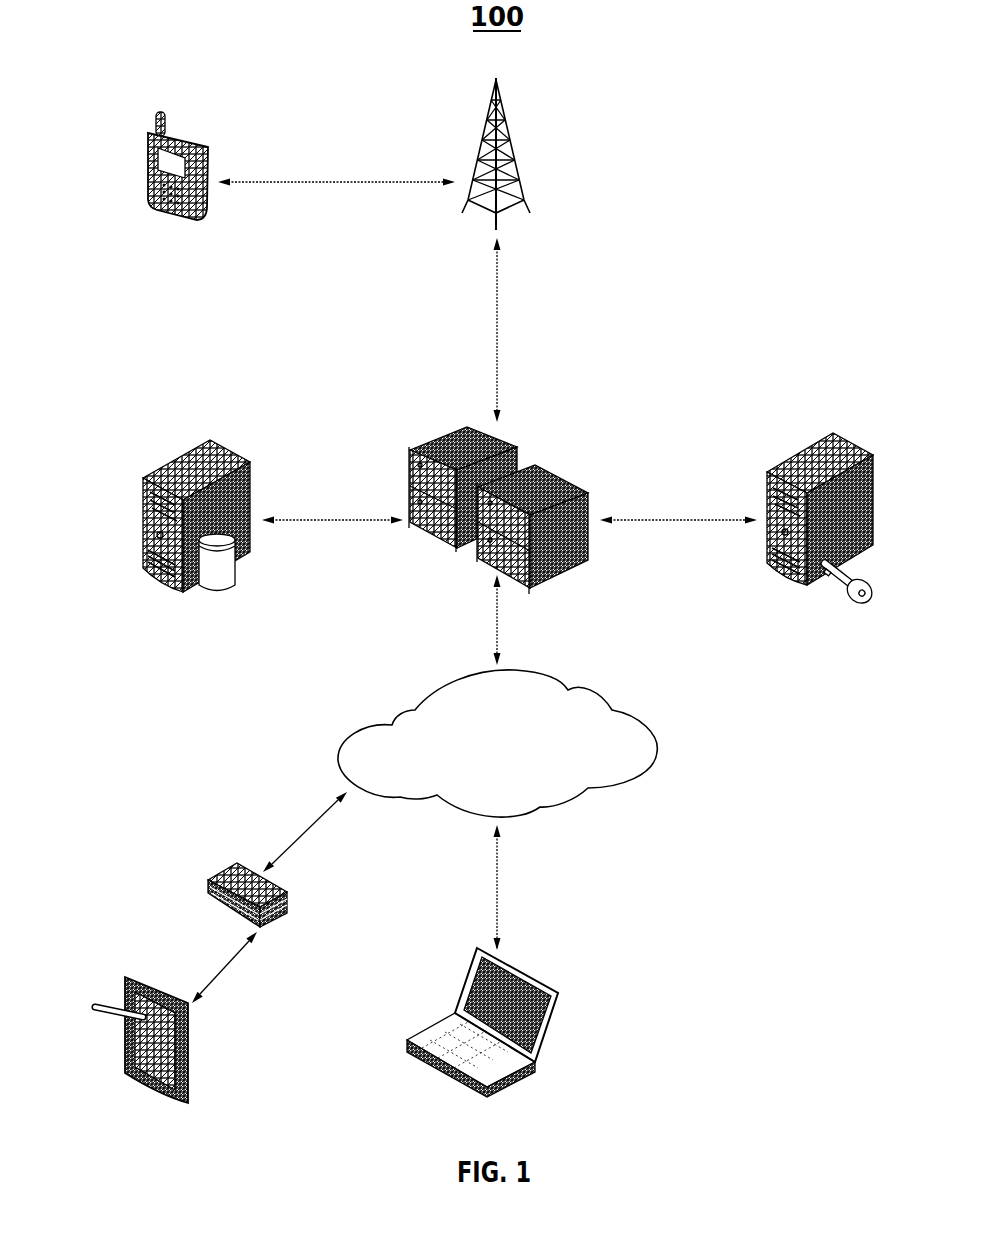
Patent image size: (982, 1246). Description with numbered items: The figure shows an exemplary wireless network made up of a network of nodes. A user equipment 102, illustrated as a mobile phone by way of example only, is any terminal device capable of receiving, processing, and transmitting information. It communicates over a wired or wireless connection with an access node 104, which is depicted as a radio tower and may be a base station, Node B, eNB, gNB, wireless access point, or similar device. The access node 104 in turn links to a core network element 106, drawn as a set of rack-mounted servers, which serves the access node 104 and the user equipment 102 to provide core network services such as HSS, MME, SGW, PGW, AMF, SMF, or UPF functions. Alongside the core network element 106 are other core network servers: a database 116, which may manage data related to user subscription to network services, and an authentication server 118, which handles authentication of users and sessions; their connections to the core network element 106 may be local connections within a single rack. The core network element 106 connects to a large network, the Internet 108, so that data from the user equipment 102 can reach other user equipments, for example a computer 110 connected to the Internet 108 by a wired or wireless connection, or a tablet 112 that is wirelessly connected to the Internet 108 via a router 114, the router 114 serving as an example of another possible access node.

The user equipment 102 is at (195, 138).
The access node 104 is at (507, 142).
The core network element 106 is at (500, 443).
The Internet 108 is at (605, 697).
The computer 110 is at (537, 975).
The tablet 112 is at (138, 973).
The router 114 is at (222, 872).
The database 116 is at (222, 447).
The authentication server 118 is at (813, 443).